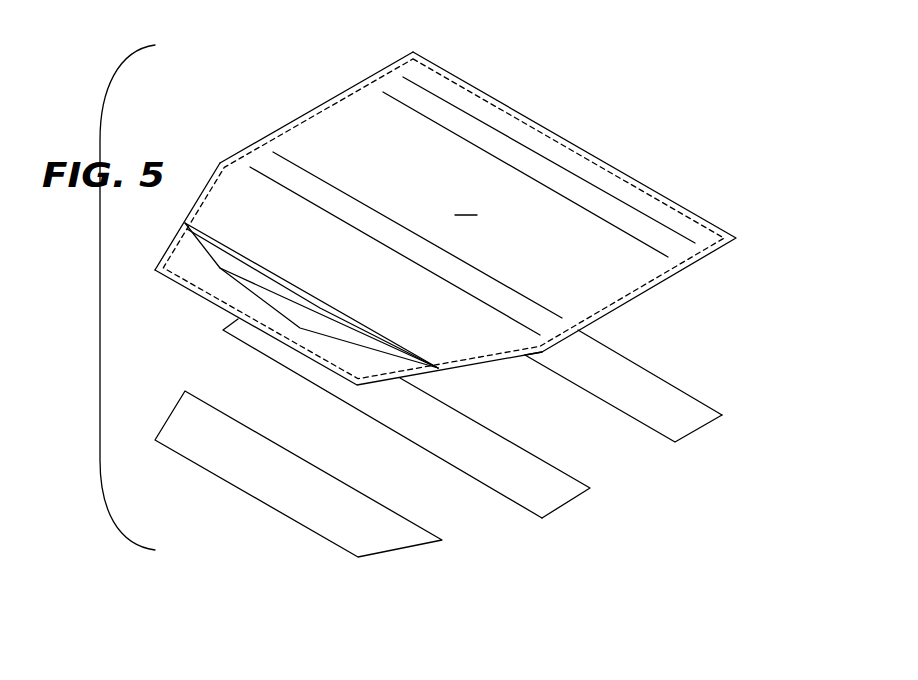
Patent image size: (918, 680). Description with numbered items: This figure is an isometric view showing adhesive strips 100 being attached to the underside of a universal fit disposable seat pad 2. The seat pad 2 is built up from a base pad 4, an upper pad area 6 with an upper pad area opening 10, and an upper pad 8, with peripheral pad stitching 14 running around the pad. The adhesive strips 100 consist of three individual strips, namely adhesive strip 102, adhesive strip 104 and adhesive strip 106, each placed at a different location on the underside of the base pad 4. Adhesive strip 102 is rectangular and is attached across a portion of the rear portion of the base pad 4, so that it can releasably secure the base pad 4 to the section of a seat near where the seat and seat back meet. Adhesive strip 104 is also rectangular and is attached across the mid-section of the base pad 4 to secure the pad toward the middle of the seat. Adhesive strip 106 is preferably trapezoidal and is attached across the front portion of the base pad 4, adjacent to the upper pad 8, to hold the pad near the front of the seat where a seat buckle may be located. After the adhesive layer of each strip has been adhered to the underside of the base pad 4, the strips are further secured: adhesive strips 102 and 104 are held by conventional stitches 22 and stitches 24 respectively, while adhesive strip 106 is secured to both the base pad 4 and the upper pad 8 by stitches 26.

The universal fit disposable seat pad 2 is at (667, 149).
The base pad 4 is at (466, 204).
The upper pad area 6 is at (362, 367).
The upper pad 8 is at (273, 300).
The upper pad area opening 10 is at (282, 323).
The peripheral pad stitching 14 is at (312, 120).
The stitches 22 is at (447, 127).
The stitches 24 is at (347, 217).
The stitches 26 is at (350, 322).
The adhesive strips 100 is at (645, 516).
The adhesive strip 102 is at (641, 382).
The adhesive strip 104 is at (505, 463).
The adhesive strip 106 is at (387, 540).